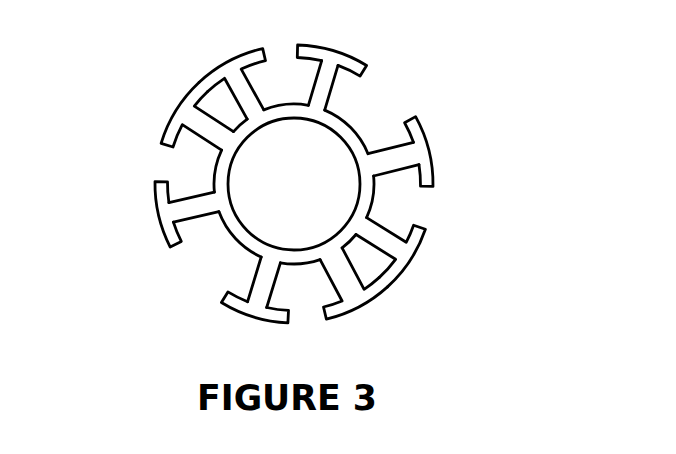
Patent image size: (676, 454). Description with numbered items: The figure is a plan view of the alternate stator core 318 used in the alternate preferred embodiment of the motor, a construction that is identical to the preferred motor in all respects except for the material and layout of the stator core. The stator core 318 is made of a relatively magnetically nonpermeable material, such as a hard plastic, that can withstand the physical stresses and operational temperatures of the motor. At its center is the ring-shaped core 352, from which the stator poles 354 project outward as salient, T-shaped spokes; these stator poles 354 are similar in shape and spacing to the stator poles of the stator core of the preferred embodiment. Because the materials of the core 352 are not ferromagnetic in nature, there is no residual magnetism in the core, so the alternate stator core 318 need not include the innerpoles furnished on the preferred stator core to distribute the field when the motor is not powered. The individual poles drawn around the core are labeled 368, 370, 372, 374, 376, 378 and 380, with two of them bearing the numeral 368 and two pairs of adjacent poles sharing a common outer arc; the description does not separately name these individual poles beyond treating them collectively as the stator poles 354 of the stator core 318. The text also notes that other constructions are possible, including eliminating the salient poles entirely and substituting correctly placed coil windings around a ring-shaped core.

The stator core 318 is at (427, 53).
The core 352 is at (317, 108).
The stator poles 354 is at (423, 138).
The radial fins 368 is at (320, 52).
The radial fin 370 is at (258, 313).
The radial fin 372 is at (167, 217).
The radial fin 374 is at (407, 251).
The radial fin 376 is at (357, 302).
The radial fin 378 is at (180, 110).
The radial fin 380 is at (238, 63).